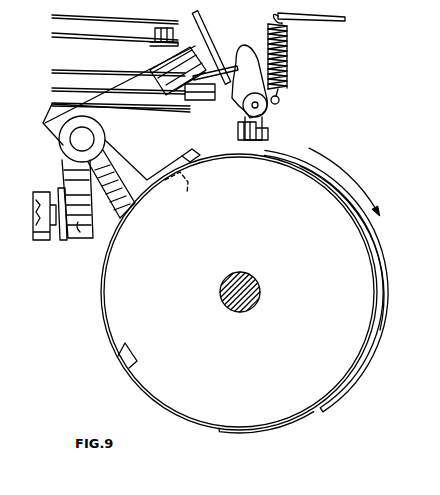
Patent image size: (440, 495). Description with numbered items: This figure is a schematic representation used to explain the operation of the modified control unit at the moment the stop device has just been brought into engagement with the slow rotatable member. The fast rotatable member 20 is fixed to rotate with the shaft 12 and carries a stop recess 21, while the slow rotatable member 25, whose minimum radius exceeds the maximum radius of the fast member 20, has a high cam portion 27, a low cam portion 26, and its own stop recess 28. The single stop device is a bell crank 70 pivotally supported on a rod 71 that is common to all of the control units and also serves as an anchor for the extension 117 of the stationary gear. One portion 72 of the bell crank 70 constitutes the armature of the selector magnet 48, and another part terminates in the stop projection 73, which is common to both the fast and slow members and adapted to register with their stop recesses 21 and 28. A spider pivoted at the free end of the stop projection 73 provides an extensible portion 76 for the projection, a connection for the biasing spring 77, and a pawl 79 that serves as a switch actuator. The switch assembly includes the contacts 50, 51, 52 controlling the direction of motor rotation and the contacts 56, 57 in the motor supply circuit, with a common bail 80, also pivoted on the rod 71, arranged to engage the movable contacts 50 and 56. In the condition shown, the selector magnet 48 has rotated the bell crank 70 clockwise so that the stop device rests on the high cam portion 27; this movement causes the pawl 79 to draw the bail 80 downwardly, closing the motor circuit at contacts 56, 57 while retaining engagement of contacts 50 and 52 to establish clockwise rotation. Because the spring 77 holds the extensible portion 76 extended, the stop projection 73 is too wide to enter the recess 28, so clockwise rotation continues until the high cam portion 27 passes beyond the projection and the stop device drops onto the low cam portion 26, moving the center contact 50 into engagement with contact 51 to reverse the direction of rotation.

The shaft 12 is at (234, 275).
The fast rotatable member 20 is at (110, 288).
The stop recess 21 is at (116, 356).
The slow rotatable member 25 is at (365, 355).
The low cam portion 26 is at (278, 428).
The high cam portion 27 is at (387, 318).
The stop recess 28 is at (176, 190).
The selector magnet 48 is at (49, 182).
The center contact 50 is at (260, 125).
The contact 51 is at (192, 116).
The contact 52 is at (181, 73).
The movable contact 56 is at (165, 28).
The contact 57 is at (163, 44).
The bell crank 70 is at (111, 133).
The rod 71 is at (76, 145).
The first portion 72 is at (75, 209).
The stop projection 73 is at (232, 142).
The extensible portion 76 is at (256, 135).
The biasing spring 77 is at (310, 35).
The pawl 79 is at (288, 64).
The common bail 80 is at (212, 50).
The extension 117 is at (182, 160).